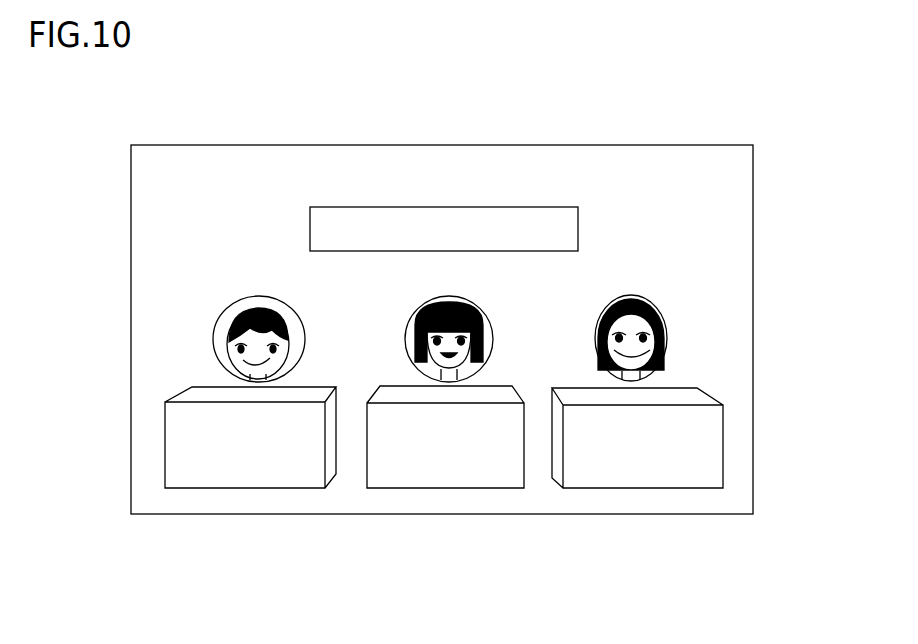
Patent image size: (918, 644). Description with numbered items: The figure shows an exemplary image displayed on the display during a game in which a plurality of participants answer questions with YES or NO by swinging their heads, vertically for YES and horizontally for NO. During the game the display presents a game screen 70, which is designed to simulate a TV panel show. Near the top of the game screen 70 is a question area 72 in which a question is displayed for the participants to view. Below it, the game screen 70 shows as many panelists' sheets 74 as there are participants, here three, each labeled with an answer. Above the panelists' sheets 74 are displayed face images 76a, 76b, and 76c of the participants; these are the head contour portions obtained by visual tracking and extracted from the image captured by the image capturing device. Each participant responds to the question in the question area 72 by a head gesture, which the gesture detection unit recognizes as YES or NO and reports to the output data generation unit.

The game screen 70 is at (754, 186).
The question area 72 is at (495, 206).
The panelists' sheets 74 is at (645, 488).
The face image 76a is at (217, 327).
The face image 76b is at (478, 300).
The face image 76c is at (666, 338).